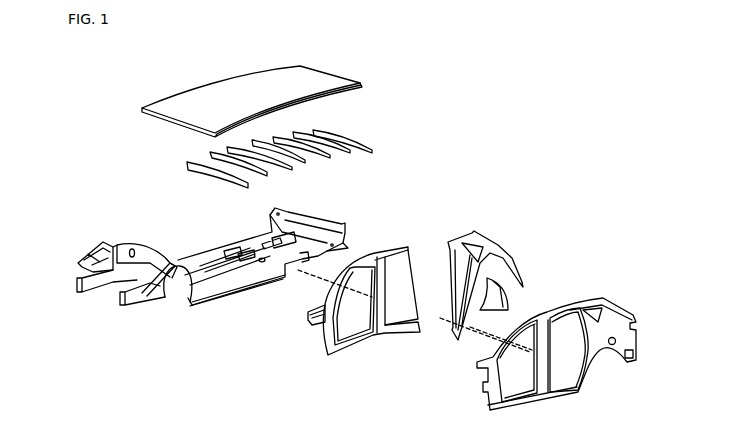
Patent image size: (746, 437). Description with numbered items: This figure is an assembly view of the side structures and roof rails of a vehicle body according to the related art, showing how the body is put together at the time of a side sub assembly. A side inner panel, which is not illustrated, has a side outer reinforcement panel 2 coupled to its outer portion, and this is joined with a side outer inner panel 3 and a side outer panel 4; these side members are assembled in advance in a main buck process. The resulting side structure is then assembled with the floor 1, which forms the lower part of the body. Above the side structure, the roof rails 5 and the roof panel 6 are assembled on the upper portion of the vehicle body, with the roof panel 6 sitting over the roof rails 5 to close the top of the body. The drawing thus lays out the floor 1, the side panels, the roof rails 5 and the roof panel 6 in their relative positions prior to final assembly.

The floor 1 is at (170, 300).
The side outer reinforcement panel 2 is at (341, 352).
The side outer inner panel 3 is at (502, 253).
The side outer panel 4 is at (593, 300).
The roof rails 5 is at (341, 137).
The roof panel 6 is at (323, 77).